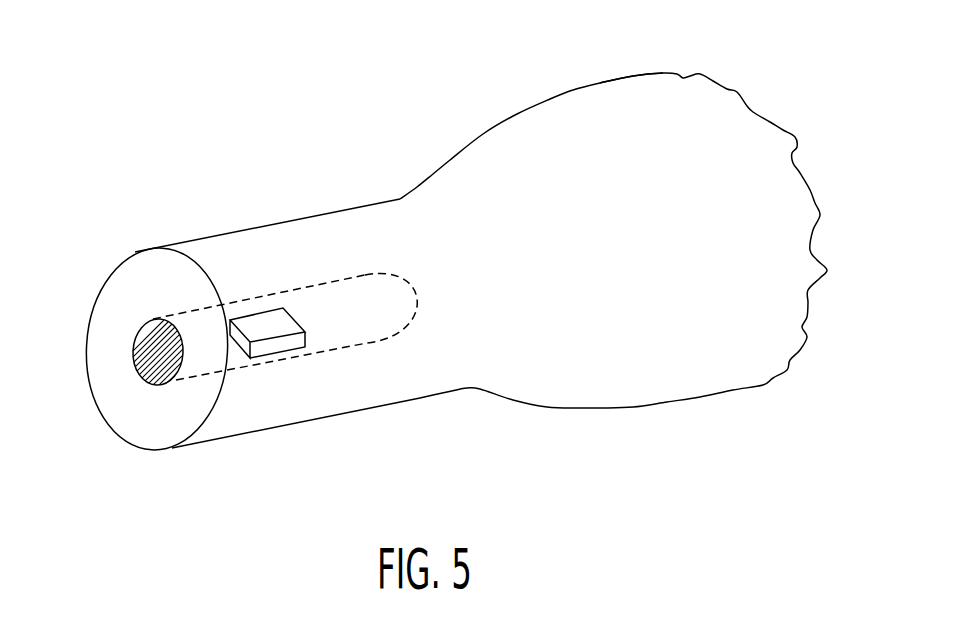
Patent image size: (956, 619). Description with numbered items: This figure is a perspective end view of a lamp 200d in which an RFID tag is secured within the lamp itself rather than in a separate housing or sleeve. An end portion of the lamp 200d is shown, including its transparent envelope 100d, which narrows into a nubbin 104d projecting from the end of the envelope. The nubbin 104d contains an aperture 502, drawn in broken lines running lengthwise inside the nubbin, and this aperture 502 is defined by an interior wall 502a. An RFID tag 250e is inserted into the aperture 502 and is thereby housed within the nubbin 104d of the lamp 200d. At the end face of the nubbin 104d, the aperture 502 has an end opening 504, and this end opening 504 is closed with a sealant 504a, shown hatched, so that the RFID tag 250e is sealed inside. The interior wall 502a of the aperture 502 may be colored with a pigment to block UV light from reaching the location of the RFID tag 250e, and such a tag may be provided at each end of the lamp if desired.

The transparent envelope 100d is at (572, 90).
The lamp 200d is at (708, 242).
The nubbin 104d is at (272, 428).
The aperture 502 is at (333, 303).
The interior wall 502a is at (367, 345).
The end opening 504 is at (179, 374).
The sealant 504a is at (142, 378).
The RFID tag 250e is at (253, 322).